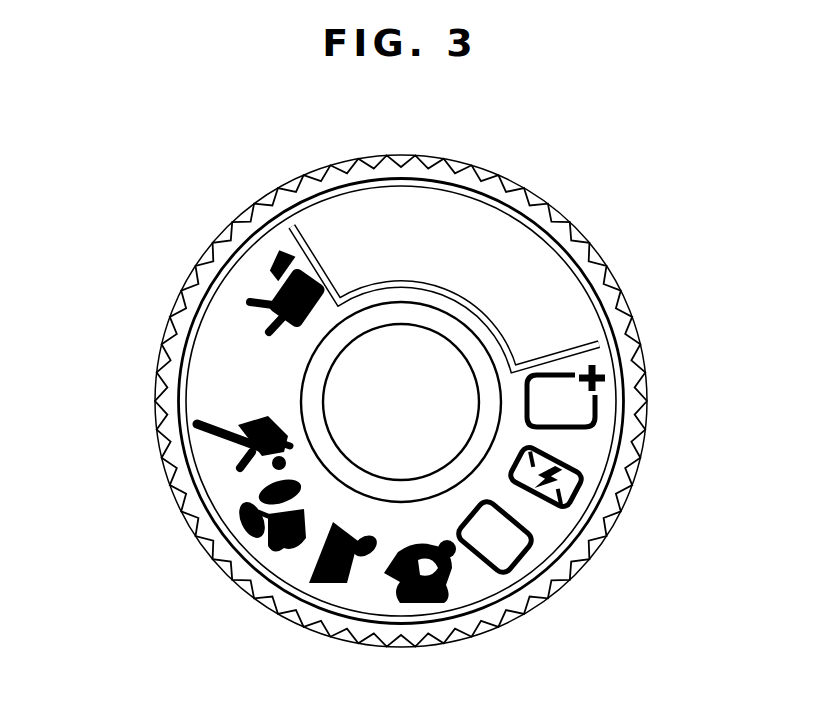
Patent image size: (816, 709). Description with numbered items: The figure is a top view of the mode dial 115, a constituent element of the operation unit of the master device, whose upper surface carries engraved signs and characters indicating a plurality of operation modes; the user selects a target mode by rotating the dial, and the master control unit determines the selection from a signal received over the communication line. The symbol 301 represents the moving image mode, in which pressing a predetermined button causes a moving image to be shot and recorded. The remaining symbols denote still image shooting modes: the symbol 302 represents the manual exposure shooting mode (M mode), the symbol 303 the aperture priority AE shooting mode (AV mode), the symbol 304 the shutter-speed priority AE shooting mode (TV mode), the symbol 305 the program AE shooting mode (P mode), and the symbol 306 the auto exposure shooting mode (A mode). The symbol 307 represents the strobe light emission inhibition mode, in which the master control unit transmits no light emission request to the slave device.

The mode dial 115 is at (128, 547).
The symbol 301 is at (272, 254).
The symbol 302 is at (335, 208).
The symbol 303 is at (435, 203).
The symbol 304 is at (514, 237).
The symbol 305 is at (573, 296).
The symbol 306 is at (600, 424).
The symbol 307 is at (545, 514).